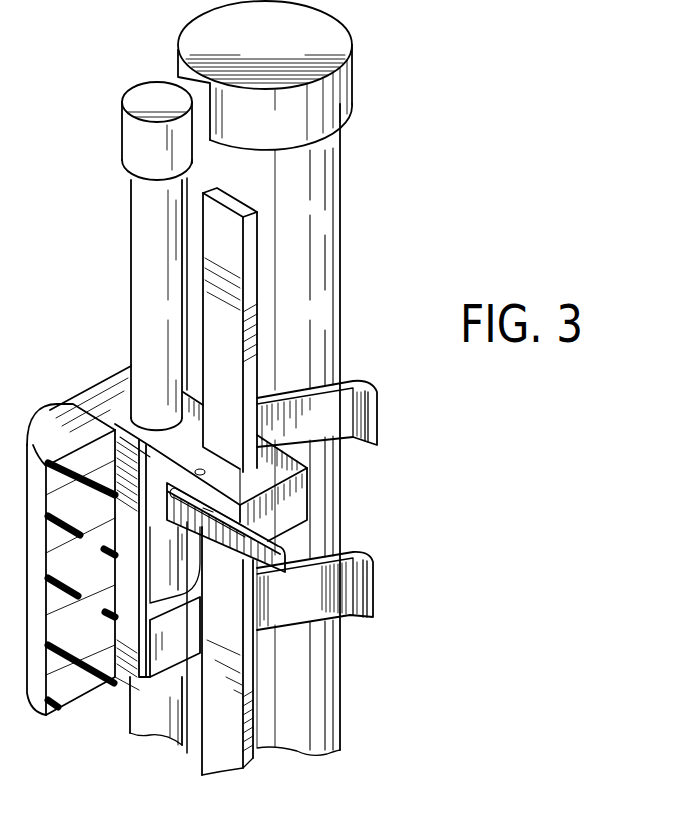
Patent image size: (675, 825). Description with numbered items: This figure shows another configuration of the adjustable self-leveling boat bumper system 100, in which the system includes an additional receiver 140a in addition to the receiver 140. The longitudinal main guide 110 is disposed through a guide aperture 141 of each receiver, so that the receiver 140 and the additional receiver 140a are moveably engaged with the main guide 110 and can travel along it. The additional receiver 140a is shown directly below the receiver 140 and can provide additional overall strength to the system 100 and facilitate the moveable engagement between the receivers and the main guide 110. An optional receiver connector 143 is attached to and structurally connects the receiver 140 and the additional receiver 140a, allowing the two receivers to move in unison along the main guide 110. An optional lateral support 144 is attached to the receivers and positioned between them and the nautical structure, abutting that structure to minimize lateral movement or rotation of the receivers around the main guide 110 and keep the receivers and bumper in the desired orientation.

The adjustable self-leveling boat bumper system 100 is at (398, 188).
The longitudinal main guide 110 is at (146, 229).
The receiver 140 is at (295, 503).
The additional receiver 140a is at (163, 678).
The guide aperture 141 is at (148, 603).
The receiver connector 143 is at (128, 578).
The lateral support 144 is at (378, 399).